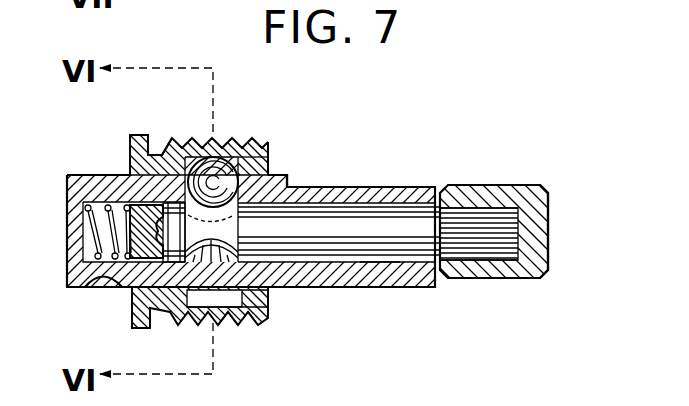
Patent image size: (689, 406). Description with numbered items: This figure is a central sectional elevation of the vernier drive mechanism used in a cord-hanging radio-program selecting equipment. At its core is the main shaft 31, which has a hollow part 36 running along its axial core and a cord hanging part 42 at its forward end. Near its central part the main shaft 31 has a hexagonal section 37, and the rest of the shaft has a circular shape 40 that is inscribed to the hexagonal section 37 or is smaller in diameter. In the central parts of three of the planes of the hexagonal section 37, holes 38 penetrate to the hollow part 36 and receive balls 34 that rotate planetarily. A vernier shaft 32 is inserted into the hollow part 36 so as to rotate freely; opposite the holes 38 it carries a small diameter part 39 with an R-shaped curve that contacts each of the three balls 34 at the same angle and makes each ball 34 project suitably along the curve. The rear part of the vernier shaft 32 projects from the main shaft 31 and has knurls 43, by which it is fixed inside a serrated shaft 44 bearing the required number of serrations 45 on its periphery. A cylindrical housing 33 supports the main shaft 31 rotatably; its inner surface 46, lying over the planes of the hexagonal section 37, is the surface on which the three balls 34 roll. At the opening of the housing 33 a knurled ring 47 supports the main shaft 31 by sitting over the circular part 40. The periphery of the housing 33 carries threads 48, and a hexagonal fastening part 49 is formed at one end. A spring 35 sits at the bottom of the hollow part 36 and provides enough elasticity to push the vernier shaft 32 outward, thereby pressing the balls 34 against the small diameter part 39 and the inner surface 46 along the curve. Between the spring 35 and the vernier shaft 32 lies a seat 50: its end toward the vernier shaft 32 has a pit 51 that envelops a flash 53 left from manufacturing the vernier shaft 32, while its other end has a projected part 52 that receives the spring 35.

The main shaft 31 is at (333, 289).
The vernier shaft 32 is at (365, 212).
The cylindrical housing 33 is at (268, 141).
The balls 34 is at (222, 158).
The spring 35 is at (76, 205).
The hollow part 36 is at (375, 266).
The hexagonal section 37 is at (262, 323).
The holes 38 is at (292, 186).
The small diameter part 39 is at (228, 323).
The circular shape 40 is at (168, 322).
The cord hanging part 42 is at (100, 185).
The knurls 43 is at (478, 252).
The serrated shaft 44 is at (468, 186).
The serrations 45 is at (534, 192).
The inner surface 46 is at (205, 318).
The knurled ring 47 is at (271, 171).
The threads 48 is at (201, 143).
The hexagonal fastening part 49 is at (148, 135).
The seat 50 is at (104, 287).
The pit 51 is at (122, 200).
The projected part 52 is at (97, 232).
The flash 53 is at (164, 152).